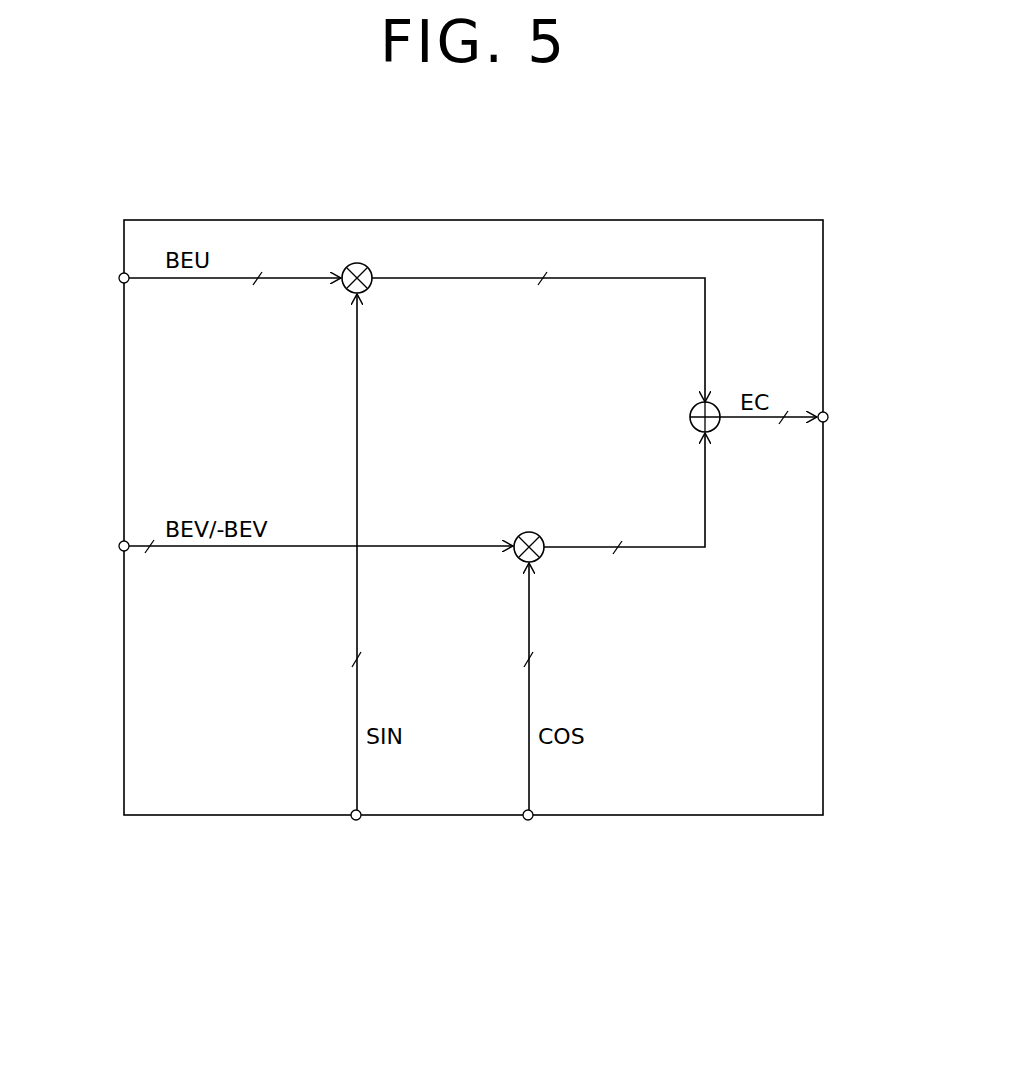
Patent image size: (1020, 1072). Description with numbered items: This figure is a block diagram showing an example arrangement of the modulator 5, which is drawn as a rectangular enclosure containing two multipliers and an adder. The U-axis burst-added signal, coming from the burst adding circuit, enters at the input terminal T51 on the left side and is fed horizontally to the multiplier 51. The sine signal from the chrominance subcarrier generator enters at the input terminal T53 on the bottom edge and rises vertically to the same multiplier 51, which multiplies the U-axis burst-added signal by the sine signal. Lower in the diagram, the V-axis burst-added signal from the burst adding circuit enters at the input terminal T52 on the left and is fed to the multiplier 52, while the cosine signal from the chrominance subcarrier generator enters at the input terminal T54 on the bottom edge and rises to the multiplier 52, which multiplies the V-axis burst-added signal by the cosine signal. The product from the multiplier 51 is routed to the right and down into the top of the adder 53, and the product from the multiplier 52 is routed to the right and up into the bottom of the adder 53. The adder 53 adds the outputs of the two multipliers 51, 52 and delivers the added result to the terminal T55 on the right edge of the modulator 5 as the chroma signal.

The modulator 5 is at (823, 700).
The multiplier 51 is at (357, 263).
The multiplier 52 is at (529, 532).
The adder 53 is at (690, 414).
The input terminal T51 is at (119, 278).
The input terminal T52 is at (119, 546).
The input terminal T53 is at (356, 820).
The input terminal T54 is at (528, 820).
The terminal T55 is at (828, 417).